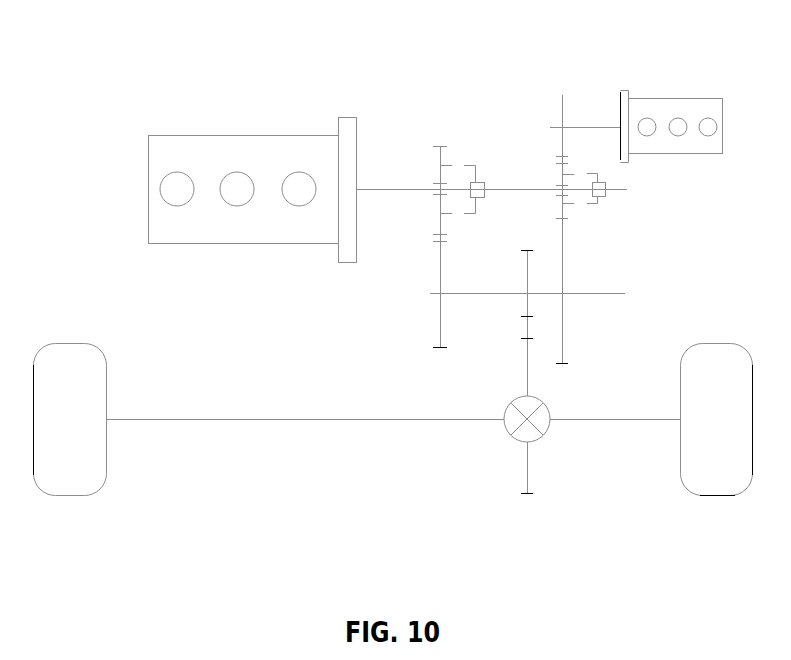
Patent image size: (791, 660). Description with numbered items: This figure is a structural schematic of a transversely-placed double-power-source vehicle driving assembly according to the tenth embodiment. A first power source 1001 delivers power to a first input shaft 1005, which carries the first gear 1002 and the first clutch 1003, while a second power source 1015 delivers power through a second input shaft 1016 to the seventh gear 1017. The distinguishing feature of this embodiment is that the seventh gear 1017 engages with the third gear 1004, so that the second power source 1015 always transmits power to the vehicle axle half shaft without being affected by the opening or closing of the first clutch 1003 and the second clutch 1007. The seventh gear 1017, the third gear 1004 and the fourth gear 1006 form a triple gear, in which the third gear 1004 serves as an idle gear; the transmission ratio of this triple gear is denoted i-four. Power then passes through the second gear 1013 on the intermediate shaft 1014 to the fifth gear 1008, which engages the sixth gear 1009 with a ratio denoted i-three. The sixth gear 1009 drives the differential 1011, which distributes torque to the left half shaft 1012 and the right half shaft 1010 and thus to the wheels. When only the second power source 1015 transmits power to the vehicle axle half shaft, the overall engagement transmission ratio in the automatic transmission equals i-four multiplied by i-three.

The first power source 1001 is at (388, 142).
The first gear 1002 is at (401, 131).
The first clutch 1003 is at (449, 117).
The third gear 1004 is at (538, 182).
The first input shaft 1005 is at (504, 207).
The fourth gear 1006 is at (653, 245).
The second clutch 1007 is at (668, 185).
The fifth gear 1008 is at (495, 323).
The sixth gear 1009 is at (503, 406).
The right half shaft 1010 is at (625, 495).
The differential 1011 is at (481, 501).
The left half shaft 1012 is at (305, 495).
The second gear 1013 is at (366, 309).
The intermediate shaft 1014 is at (455, 312).
The second power source 1015 is at (672, 100).
The second input shaft 1016 is at (585, 82).
The seventh gear 1017 is at (521, 82).